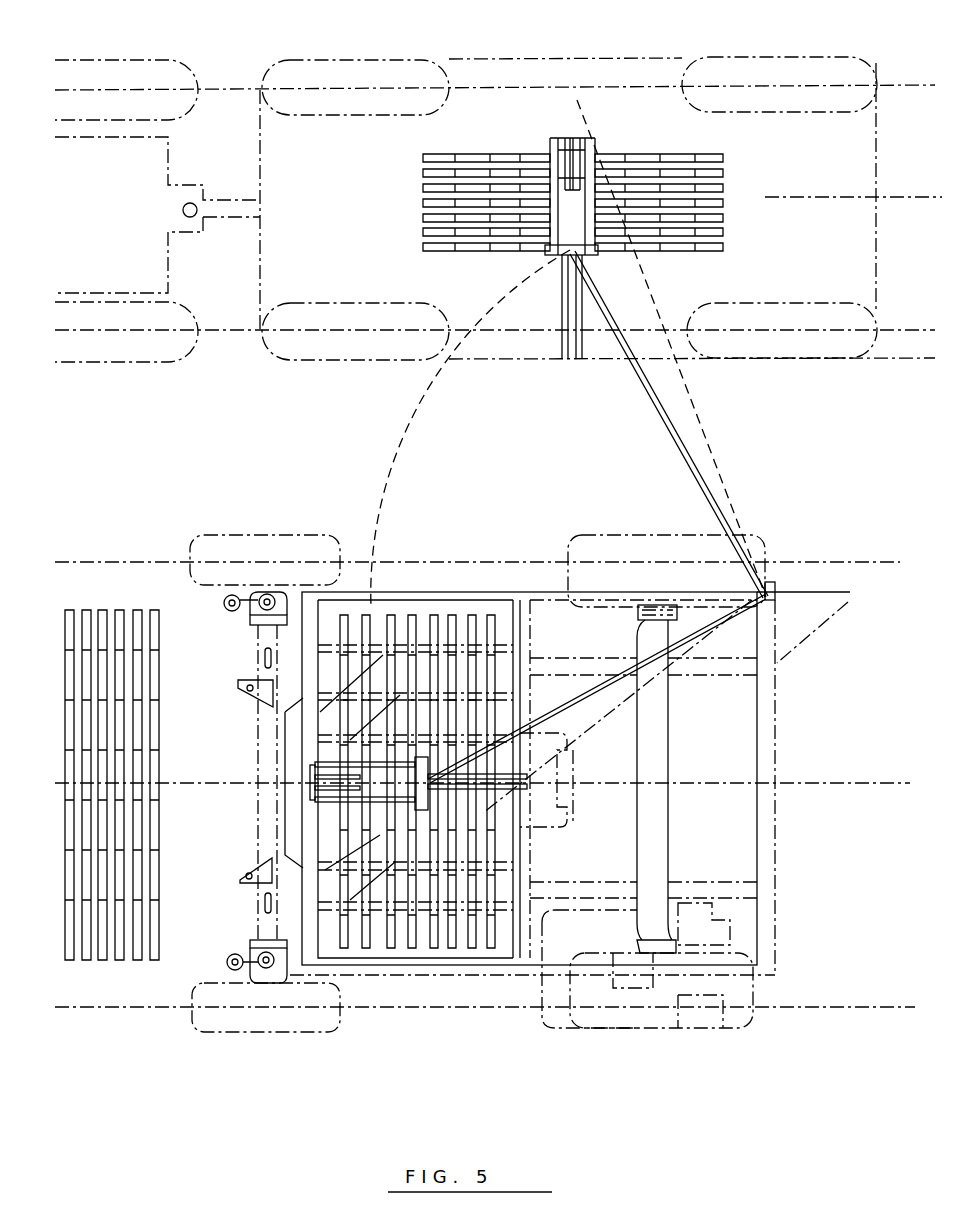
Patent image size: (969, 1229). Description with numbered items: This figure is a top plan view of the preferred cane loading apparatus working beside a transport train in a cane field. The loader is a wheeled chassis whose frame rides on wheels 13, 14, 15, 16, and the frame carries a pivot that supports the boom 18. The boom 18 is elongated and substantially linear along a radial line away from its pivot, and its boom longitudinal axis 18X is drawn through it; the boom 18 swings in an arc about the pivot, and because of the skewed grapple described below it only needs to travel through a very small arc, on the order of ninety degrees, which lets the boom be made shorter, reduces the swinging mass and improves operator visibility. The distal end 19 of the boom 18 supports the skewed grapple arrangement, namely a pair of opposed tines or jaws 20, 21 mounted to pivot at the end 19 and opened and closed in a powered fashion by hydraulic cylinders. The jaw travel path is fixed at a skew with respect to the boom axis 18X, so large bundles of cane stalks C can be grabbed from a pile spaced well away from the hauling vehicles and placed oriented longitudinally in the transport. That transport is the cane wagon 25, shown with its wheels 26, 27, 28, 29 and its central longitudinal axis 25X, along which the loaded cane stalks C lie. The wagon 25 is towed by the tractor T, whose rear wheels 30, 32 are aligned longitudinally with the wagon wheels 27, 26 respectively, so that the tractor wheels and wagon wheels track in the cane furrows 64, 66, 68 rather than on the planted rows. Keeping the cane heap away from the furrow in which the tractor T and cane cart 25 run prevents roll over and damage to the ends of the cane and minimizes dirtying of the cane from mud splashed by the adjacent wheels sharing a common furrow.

The wheel 13 is at (278, 1032).
The wheel 14 is at (248, 535).
The wheel 15 is at (620, 1030).
The wheel 16 is at (640, 535).
The boom 18 is at (693, 475).
The boom longitudinal axis 18X is at (671, 434).
The boom distal end 19 is at (545, 250).
The tine or jaw 20 is at (562, 312).
The tine or jaw 21 is at (548, 142).
The cane wagon 25 is at (260, 148).
The central axis of cane wagon 25X is at (876, 198).
The wagon wheel 26 is at (353, 346).
The wagon wheel 27 is at (358, 62).
The wagon wheel 28 is at (802, 343).
The wagon wheel 29 is at (778, 58).
The tractor rear wheel 30 is at (150, 90).
The tractor rear wheel 32 is at (133, 332).
The furrow 64 is at (893, 562).
The furrow 66 is at (910, 783).
The furrow 68 is at (912, 1007).
The cane stalks C is at (423, 233).
The tractor T is at (107, 60).